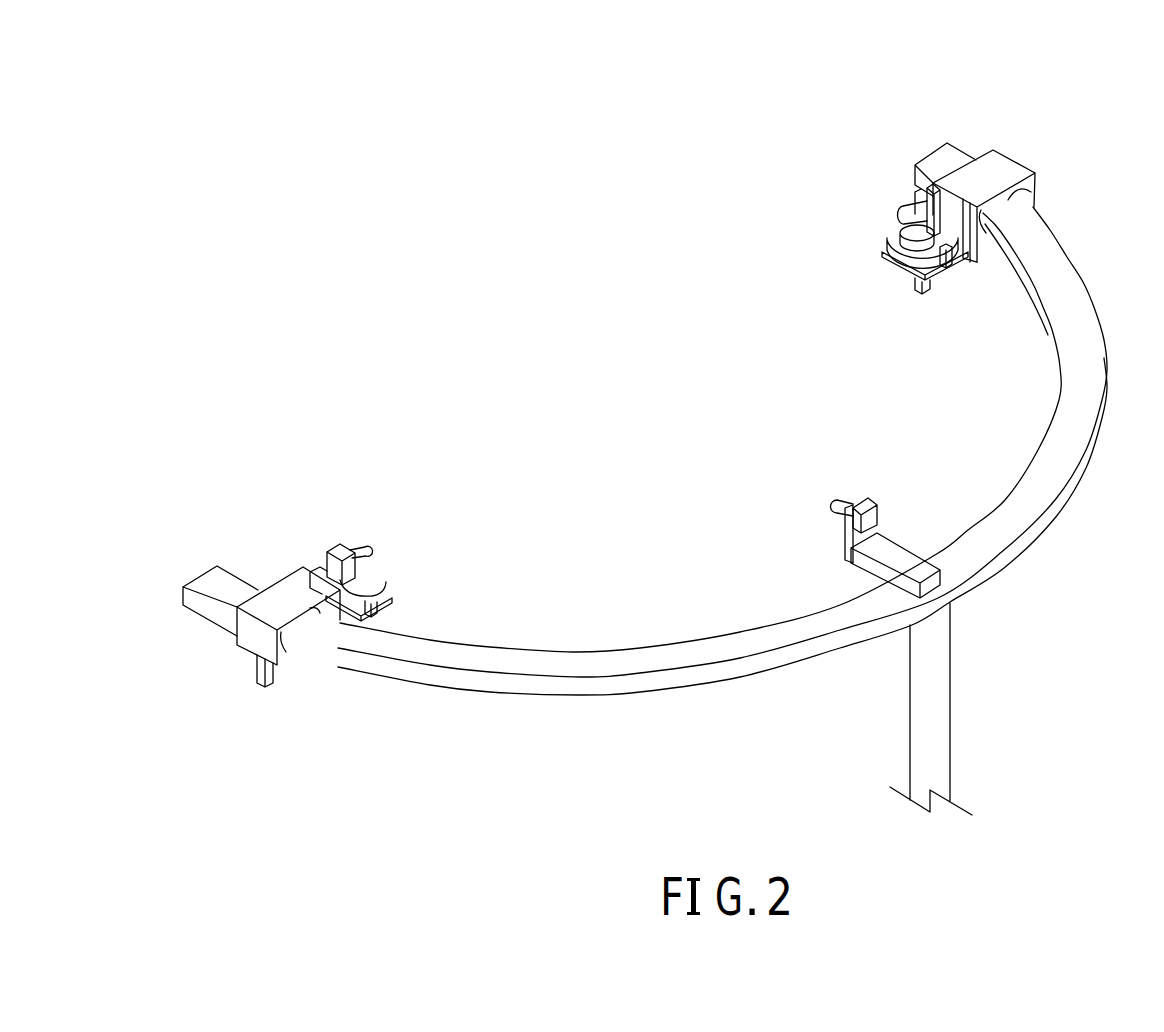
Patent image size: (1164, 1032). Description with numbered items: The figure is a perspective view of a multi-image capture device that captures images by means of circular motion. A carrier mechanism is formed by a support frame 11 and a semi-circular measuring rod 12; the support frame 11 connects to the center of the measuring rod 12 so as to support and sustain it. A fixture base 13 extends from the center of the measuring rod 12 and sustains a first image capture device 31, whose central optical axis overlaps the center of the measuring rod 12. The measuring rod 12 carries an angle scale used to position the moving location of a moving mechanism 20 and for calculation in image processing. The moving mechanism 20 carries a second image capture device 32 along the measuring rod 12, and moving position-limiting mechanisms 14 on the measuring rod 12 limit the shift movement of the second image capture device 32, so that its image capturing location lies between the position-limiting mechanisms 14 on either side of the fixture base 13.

The support frame 11 is at (930, 707).
The measuring rod 12 is at (830, 625).
The fixture base 13 is at (897, 552).
The moving position-limiting mechanism 14 is at (940, 157).
The moving mechanism 20 is at (1060, 135).
The first image capture device 31 is at (870, 512).
The second image capture device 32 is at (915, 212).